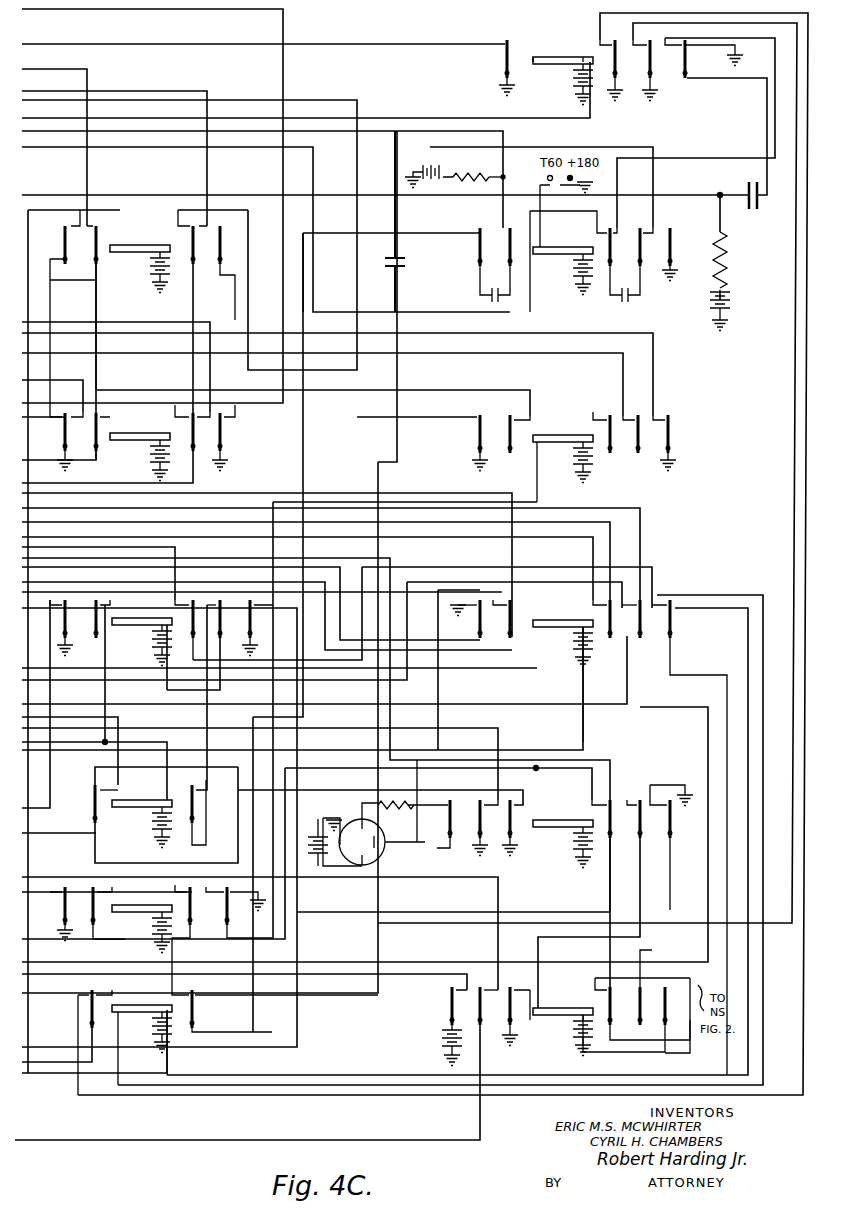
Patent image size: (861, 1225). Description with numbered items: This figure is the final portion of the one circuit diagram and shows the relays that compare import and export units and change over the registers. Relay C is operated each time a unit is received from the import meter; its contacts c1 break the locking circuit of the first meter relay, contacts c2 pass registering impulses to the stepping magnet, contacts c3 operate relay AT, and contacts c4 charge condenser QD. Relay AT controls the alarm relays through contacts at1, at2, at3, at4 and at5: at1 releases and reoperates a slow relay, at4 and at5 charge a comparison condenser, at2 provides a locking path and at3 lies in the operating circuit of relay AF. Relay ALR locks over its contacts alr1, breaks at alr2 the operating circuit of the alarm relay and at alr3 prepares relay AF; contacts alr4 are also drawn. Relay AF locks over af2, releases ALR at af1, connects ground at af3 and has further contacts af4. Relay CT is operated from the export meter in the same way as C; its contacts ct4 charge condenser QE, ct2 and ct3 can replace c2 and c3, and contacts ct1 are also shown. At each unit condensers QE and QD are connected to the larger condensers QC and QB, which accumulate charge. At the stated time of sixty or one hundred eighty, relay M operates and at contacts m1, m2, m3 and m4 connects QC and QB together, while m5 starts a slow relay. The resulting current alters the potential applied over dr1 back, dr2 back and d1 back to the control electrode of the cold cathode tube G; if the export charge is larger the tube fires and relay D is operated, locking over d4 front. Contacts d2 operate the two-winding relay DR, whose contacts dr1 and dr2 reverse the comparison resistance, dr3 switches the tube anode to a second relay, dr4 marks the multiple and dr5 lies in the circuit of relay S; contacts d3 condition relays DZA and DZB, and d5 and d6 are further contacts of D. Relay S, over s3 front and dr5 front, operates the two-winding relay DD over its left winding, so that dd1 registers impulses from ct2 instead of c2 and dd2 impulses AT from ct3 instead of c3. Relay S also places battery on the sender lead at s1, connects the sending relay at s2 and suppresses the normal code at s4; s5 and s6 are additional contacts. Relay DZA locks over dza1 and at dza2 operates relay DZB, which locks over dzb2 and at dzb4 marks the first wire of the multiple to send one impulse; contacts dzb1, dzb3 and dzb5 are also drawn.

The relay C is at (563, 71).
The contacts c1 is at (507, 68).
The contacts c2 is at (612, 70).
The contacts c3 is at (646, 70).
The contacts c4 is at (704, 58).
The relay ALR is at (140, 260).
The contacts alr1 is at (73, 313).
The contacts alr2 is at (100, 308).
The contacts alr3 is at (194, 237).
The contact alr4 is at (227, 273).
The relay AF is at (140, 448).
The contacts af1 is at (66, 441).
The contacts af2 is at (102, 436).
The contacts af3 is at (192, 428).
The contact af4 is at (223, 438).
The relay M is at (563, 261).
The contacts m1 is at (485, 247).
The contacts m2 is at (515, 247).
The contacts m3 is at (610, 247).
The contacts m4 is at (646, 247).
The contacts m5 is at (672, 254).
The condenser QC is at (495, 283).
The condenser QB is at (625, 283).
The condenser QD is at (760, 212).
The condenser QE is at (408, 262).
The relay AT is at (563, 459).
The contacts at1 is at (482, 443).
The contacts at2 is at (519, 434).
The contacts at3 is at (608, 432).
The contacts at4 is at (637, 434).
The contacts at5 is at (667, 443).
The relay DZB is at (142, 633).
The contact dzb1 is at (64, 628).
The contacts dzb2 is at (105, 672).
The contact dzb3 is at (194, 630).
The contacts dzb4 is at (224, 619).
The contact dzb5 is at (257, 628).
The relay DR is at (563, 671).
The contacts dr1 is at (472, 619).
The contacts dr2 is at (508, 619).
The contacts dr3 is at (608, 619).
The contacts dr4 is at (638, 619).
The contacts dr5 is at (689, 837).
The relay DZA is at (142, 815).
The contacts dza1 is at (90, 804).
The contacts dza2 is at (202, 812).
The cold cathode tube G is at (355, 800).
The relay D is at (563, 817).
The contacts d1 is at (448, 824).
The contacts d2 is at (485, 828).
The contacts d3 is at (510, 828).
The contacts d4 is at (605, 856).
The contact d5 is at (638, 819).
The contact d6 is at (671, 847).
The relay CT is at (142, 919).
The contact ct1 is at (68, 914).
The contacts ct2 is at (108, 913).
The contacts ct3 is at (187, 937).
The contacts ct4 is at (239, 912).
The relay DD is at (142, 1035).
The contacts dd1 is at (95, 1042).
The contacts dd2 is at (275, 1011).
The relay S is at (599, 1022).
The contacts s1 is at (454, 1026).
The contacts s2 is at (488, 1006).
The contacts s3 is at (516, 1016).
The contacts s4 is at (642, 1009).
The contact s5 is at (645, 987).
The contact s6 is at (677, 1015).